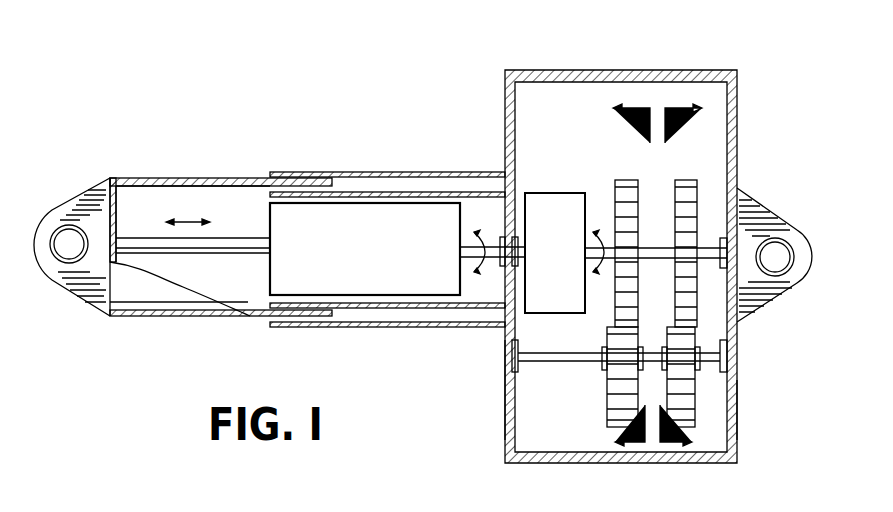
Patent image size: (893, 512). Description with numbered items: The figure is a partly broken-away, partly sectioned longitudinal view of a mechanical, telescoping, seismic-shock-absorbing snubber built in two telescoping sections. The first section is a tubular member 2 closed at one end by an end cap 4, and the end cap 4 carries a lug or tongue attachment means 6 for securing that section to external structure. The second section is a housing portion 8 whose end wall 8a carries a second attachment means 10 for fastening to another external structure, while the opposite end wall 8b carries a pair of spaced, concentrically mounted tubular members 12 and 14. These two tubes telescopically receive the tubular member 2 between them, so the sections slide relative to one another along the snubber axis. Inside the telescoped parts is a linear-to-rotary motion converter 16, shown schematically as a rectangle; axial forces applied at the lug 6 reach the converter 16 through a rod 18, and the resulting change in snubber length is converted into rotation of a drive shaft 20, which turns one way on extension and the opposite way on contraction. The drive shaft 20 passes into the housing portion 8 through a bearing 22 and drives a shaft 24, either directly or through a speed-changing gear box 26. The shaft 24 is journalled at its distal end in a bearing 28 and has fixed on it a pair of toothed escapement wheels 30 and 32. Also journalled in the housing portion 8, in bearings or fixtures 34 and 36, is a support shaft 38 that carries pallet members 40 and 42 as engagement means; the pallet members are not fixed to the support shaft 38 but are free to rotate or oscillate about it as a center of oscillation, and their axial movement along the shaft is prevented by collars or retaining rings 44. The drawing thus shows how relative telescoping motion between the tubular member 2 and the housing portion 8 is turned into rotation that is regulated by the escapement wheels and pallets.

The tubular member 2 is at (172, 317).
The end cap 4 is at (117, 200).
The attachment means 6 is at (58, 268).
The housing portion 8 is at (610, 69).
The end wall 8a is at (737, 418).
The end wall 8b is at (503, 380).
The attachment means 10 is at (750, 212).
The tubular member 12 is at (378, 309).
The tubular member 14 is at (432, 327).
The motion converter 16 is at (270, 268).
The rod 18 is at (188, 244).
The drive shaft 20 is at (490, 265).
The bearing 22 is at (508, 237).
The shaft 24 is at (653, 259).
The speed-changing gear box 26 is at (552, 193).
The bearing 28 is at (722, 267).
The toothed escapement wheel 30 is at (622, 180).
The toothed escapement wheel 32 is at (683, 180).
The bearing 34 is at (516, 372).
The bearing 36 is at (722, 372).
The support shaft 38 is at (562, 362).
The pallet member 40 is at (607, 400).
The pallet member 42 is at (692, 410).
The retaining rings 44 is at (604, 347).